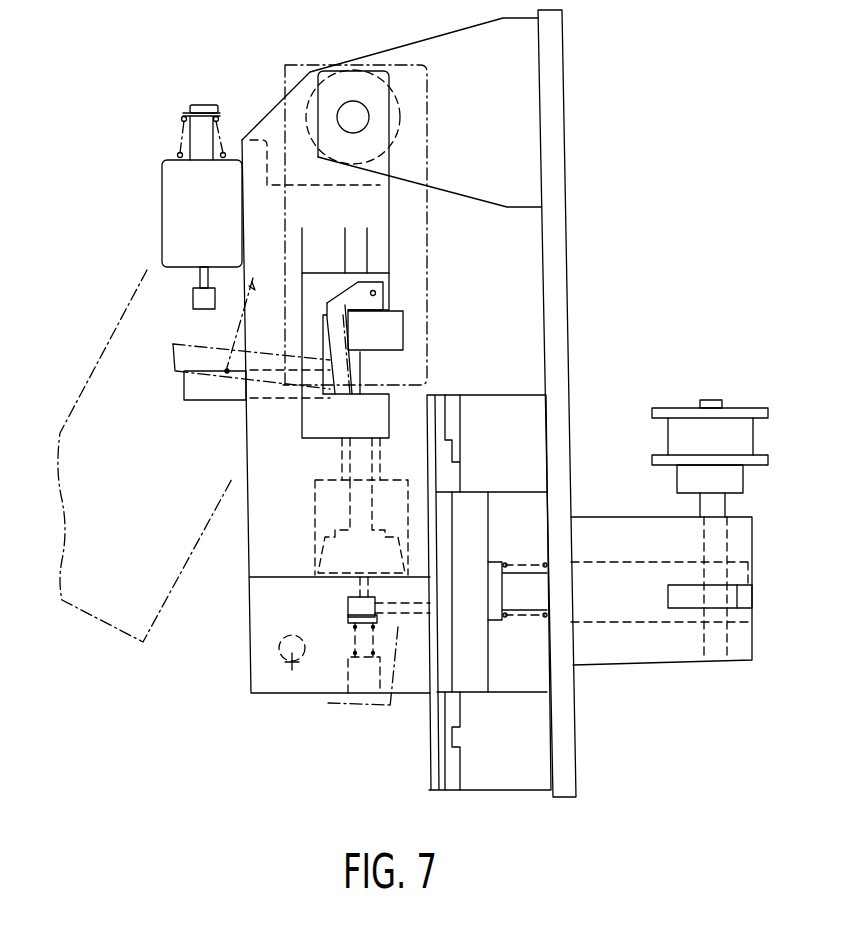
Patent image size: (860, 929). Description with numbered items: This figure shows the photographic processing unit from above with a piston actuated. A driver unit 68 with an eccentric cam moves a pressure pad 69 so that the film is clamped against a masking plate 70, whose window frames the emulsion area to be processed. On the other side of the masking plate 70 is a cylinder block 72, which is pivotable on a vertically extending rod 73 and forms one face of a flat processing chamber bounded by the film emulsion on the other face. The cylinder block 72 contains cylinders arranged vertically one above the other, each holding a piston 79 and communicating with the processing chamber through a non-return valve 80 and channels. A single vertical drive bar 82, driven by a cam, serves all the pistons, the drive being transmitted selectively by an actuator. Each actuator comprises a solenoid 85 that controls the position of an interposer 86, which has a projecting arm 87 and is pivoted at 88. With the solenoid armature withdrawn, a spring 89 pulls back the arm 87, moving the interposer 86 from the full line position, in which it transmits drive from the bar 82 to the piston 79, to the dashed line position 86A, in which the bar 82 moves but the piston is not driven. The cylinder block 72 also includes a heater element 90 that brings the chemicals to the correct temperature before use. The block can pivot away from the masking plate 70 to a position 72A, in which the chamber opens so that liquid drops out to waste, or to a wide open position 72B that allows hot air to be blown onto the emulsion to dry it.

The driver unit 68 is at (740, 525).
The pressure pad 69 is at (467, 507).
The masking plate 70 is at (437, 715).
The cylinder block 72 is at (262, 667).
The position of cylinder block 72A is at (335, 705).
The wide open position of cylinder block 72B is at (120, 633).
The rod 73 is at (353, 105).
The piston 79 is at (327, 553).
The non-return valve 80 is at (348, 604).
The drive bar 82 is at (402, 331).
The solenoid 85 is at (177, 196).
The interposer 86 is at (357, 370).
The dashed line position of interposer 86A is at (276, 386).
The projecting arm 87 is at (207, 393).
The pivot 88 is at (378, 294).
The spring 89 is at (228, 343).
The heater element 90 is at (288, 668).